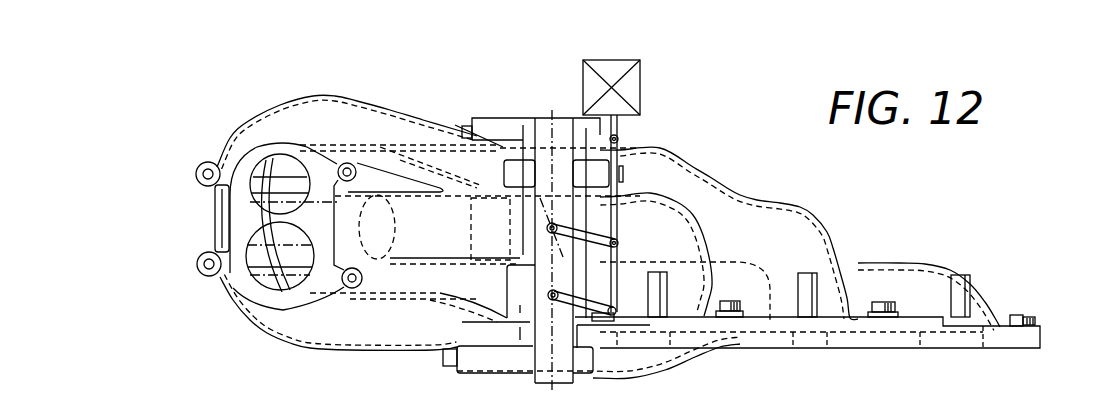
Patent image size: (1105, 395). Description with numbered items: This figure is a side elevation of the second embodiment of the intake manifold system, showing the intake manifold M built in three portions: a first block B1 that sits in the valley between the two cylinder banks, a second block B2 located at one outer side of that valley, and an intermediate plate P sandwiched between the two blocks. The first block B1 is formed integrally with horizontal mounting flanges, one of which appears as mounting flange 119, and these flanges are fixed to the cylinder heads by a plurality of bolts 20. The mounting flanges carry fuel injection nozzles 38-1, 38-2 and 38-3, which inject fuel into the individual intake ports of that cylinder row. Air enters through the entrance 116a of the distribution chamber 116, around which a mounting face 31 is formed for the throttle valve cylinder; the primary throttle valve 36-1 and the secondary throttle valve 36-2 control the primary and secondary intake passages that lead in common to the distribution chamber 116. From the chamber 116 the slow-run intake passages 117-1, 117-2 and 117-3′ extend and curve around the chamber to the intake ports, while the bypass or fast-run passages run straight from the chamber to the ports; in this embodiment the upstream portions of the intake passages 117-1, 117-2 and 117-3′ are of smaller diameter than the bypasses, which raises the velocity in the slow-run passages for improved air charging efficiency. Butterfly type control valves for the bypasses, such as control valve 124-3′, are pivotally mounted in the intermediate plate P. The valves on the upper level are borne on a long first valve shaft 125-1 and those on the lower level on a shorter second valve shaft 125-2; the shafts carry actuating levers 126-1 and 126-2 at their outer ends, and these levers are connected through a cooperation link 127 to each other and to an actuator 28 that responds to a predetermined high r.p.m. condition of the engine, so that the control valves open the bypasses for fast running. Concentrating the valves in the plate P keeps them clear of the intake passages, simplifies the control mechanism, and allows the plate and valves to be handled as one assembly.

The actuator 28 is at (640, 80).
The intermediate plate P is at (552, 125).
The second block B2 is at (385, 118).
The first block B1 is at (683, 177).
The intake manifold M is at (785, 203).
The primary throttle valve 36-1 is at (232, 203).
The secondary throttle valve 36-2 is at (248, 280).
The mounting face 31 is at (237, 220).
The entrance 116a is at (248, 238).
The distribution chamber 116 is at (380, 292).
The control valve 124-3′ is at (556, 173).
The first valve shaft 125-1 is at (547, 228).
The second valve shaft 125-2 is at (548, 295).
The actuating lever 126-1 is at (597, 222).
The actuating lever 126-2 is at (598, 288).
The cooperation link 127 is at (618, 224).
The intake passage 117-3′ is at (645, 201).
The intake passage 117-2 is at (800, 219).
The intake passage 117-1 is at (903, 271).
The fuel injection nozzle 38-3 is at (658, 272).
The fuel injection nozzle 38-2 is at (807, 273).
The fuel injection nozzle 38-1 is at (958, 275).
The bolt 20 is at (882, 296).
The mounting flange 119 is at (1040, 342).